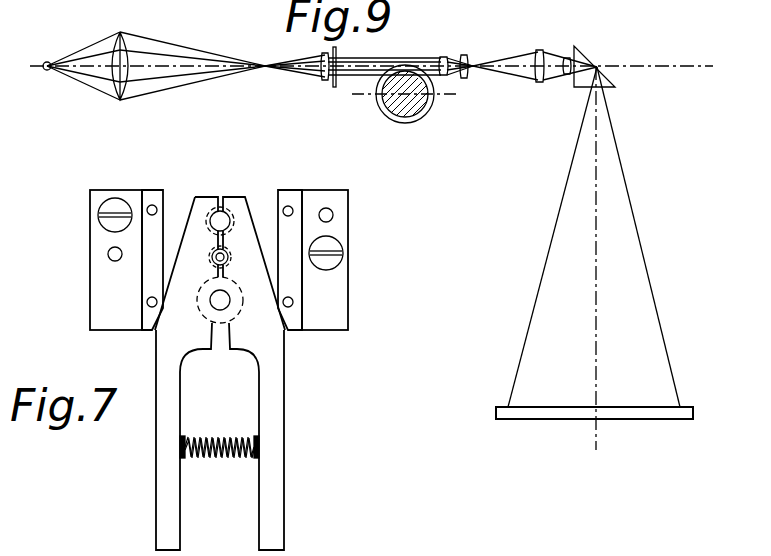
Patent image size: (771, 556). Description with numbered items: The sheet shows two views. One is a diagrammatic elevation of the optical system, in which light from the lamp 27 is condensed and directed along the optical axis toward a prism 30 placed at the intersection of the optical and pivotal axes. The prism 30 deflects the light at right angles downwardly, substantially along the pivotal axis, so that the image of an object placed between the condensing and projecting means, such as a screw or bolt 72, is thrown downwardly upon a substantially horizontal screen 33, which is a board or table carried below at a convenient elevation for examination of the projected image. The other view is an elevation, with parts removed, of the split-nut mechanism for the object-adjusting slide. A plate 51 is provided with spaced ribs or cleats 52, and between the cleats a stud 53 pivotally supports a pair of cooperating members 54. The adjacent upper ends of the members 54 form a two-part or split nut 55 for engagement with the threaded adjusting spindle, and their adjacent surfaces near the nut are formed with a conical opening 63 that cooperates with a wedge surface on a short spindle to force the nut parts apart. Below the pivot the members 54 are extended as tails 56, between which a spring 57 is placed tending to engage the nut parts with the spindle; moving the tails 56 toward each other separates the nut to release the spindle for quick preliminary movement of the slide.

In FIG. 9, the lamp 27 is at (47, 72).
In FIG. 9, the prism 30 is at (590, 63).
In FIG. 9, the screen 33 is at (685, 418).
In FIG. 9, the screw or bolt 72 is at (410, 113).
In FIG. 7, the plate 51 is at (97, 276).
In FIG. 7, the ribs or cleats 52 is at (142, 290).
In FIG. 7, the stud 53 is at (218, 302).
In FIG. 7, the cooperating members 54 is at (198, 320).
In FIG. 7, the split nut 55 is at (224, 211).
In FIG. 7, the conical opening 63 is at (228, 250).
In FIG. 7, the tails 56 is at (163, 490).
In FIG. 7, the spring 57 is at (240, 420).